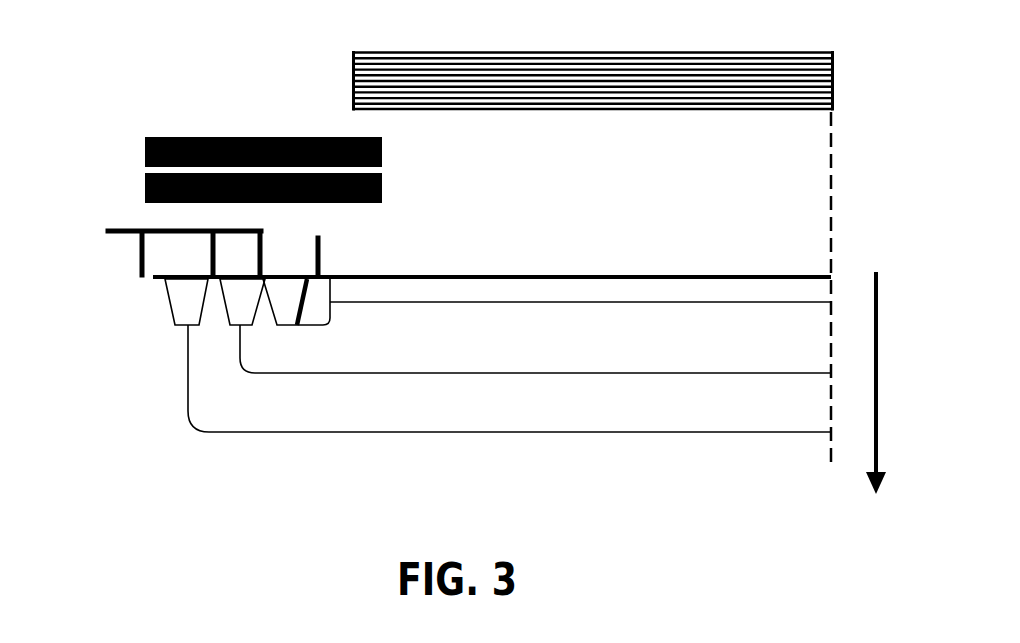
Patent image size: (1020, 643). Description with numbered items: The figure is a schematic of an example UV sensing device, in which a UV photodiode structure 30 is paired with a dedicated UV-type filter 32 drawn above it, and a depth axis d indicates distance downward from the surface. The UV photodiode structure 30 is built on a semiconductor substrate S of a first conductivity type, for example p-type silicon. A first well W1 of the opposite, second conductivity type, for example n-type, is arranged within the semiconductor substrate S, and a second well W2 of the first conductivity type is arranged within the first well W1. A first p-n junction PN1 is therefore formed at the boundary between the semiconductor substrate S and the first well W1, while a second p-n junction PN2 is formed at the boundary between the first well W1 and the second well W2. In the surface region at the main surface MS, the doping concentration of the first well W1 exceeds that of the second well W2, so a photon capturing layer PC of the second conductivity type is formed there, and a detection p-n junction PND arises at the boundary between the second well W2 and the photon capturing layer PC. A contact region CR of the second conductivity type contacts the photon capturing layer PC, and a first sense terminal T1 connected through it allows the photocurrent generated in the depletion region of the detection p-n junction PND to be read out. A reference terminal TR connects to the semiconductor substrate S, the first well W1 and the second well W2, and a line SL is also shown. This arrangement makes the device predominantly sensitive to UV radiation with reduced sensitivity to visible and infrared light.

The UV-type filter 32 is at (702, 52).
The signal lines SL is at (302, 137).
The reference terminal TR is at (117, 228).
The UV photodiode structure 30 is at (63, 270).
The first sense terminal T1 is at (322, 257).
The contact region CR is at (317, 301).
The photon capturing layer PC is at (513, 290).
The main surface MS is at (647, 277).
The detection p-n junction PND is at (693, 305).
The second well W2 is at (535, 349).
The first well W1 is at (509, 378).
The semiconductor substrate S is at (195, 434).
The second p-n junction PN2 is at (567, 375).
The first p-n junction PN1 is at (460, 434).
The depth axis d is at (905, 386).